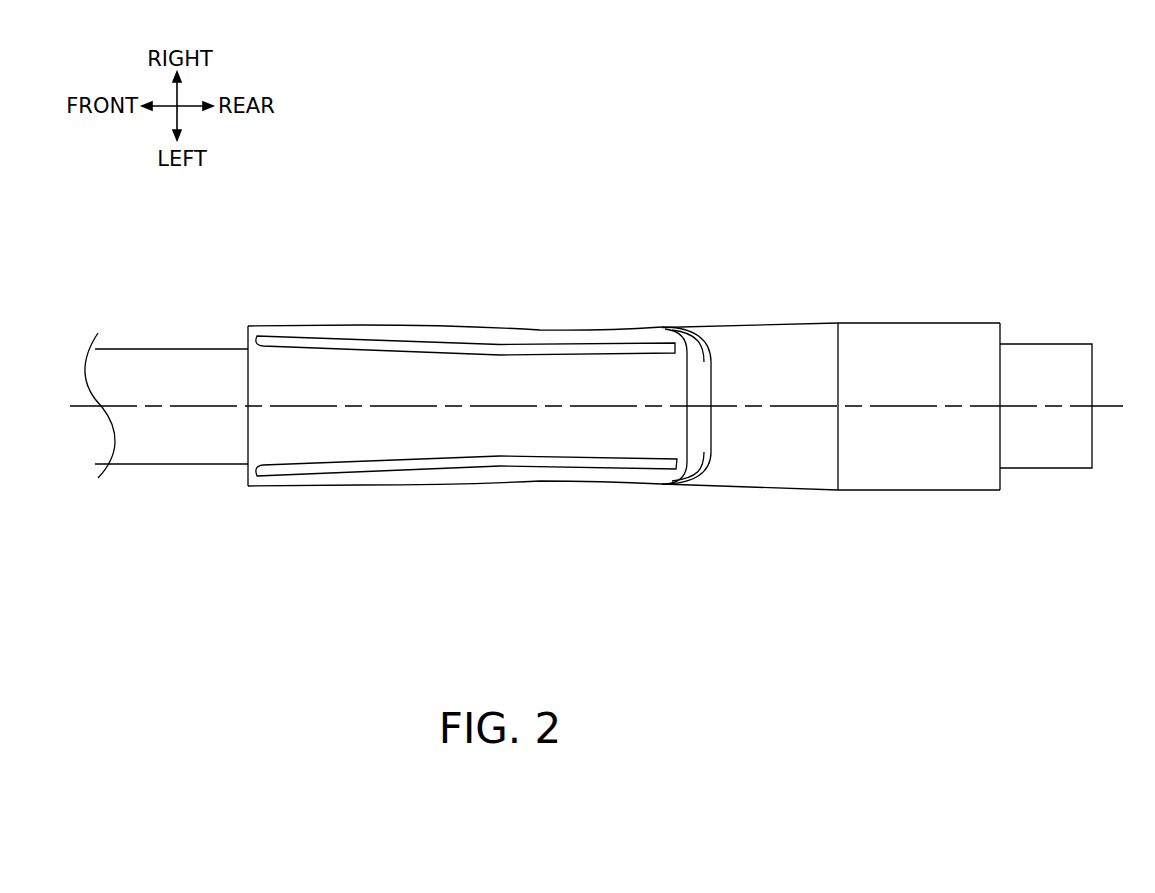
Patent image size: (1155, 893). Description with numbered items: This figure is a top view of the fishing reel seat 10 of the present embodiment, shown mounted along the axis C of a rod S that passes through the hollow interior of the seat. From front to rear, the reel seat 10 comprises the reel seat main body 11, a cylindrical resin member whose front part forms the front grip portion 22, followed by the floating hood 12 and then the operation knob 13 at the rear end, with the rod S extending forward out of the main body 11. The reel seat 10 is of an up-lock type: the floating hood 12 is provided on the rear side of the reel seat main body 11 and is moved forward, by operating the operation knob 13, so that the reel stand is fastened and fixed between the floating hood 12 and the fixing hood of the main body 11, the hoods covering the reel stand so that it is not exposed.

The reel seat 10 is at (533, 281).
The reel seat main body 11 is at (483, 378).
The front grip portion 22 is at (413, 373).
The floating hood 12 is at (764, 358).
The operation knob 13 is at (925, 356).
The rod S is at (145, 360).
The central axis C is at (612, 406).